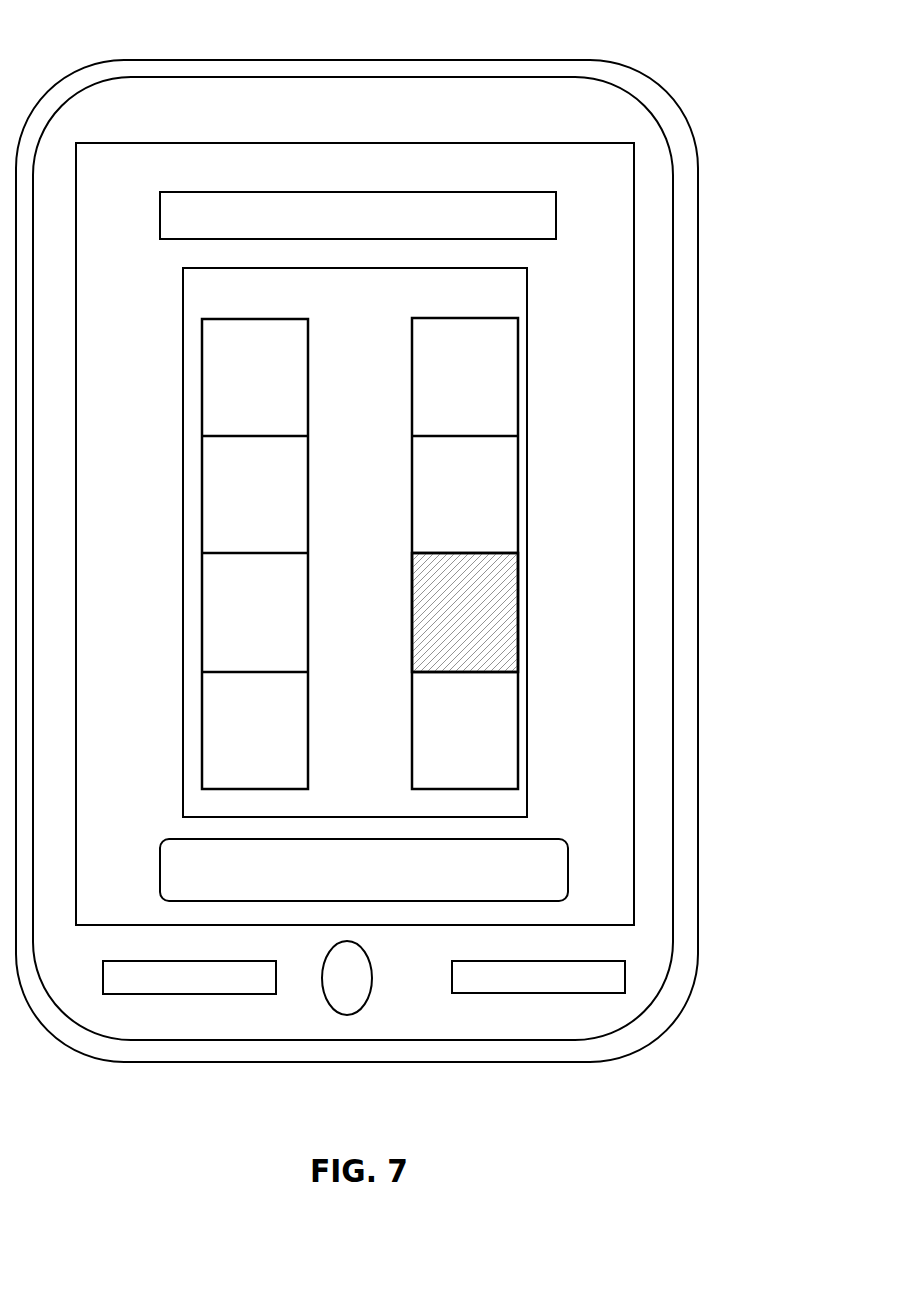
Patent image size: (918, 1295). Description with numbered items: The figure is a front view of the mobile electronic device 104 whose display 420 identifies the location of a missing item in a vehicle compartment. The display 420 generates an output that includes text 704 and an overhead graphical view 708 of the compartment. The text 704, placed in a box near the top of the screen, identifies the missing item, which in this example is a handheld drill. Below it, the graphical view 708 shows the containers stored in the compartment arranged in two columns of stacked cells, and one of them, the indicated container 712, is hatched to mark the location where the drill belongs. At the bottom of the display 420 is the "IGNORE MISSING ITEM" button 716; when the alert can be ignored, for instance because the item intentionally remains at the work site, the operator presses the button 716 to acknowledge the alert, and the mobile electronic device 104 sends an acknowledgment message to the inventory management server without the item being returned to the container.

The mobile electronic device 104 is at (140, 60).
The display 420 is at (415, 143).
The text 704 is at (556, 223).
The graphical view 708 is at (172, 560).
The indicated container 712 is at (518, 610).
The "IGNORE MISSING ITEM" button 716 is at (160, 870).